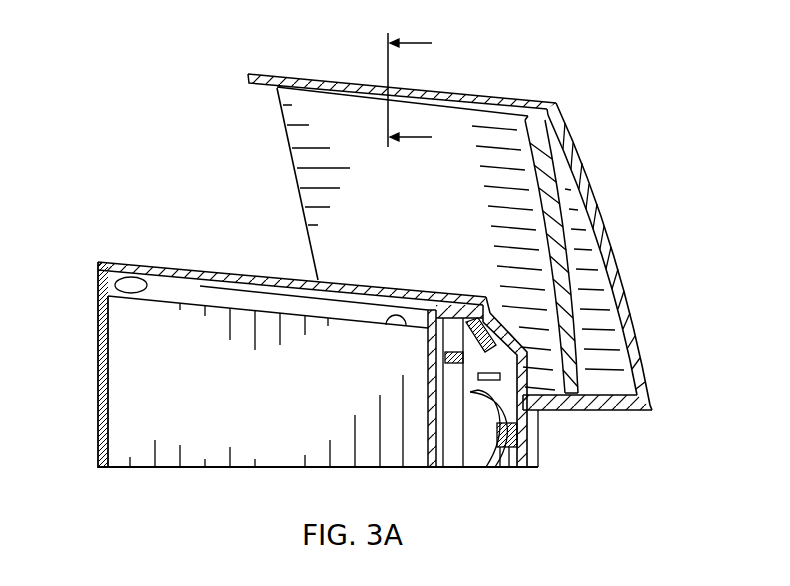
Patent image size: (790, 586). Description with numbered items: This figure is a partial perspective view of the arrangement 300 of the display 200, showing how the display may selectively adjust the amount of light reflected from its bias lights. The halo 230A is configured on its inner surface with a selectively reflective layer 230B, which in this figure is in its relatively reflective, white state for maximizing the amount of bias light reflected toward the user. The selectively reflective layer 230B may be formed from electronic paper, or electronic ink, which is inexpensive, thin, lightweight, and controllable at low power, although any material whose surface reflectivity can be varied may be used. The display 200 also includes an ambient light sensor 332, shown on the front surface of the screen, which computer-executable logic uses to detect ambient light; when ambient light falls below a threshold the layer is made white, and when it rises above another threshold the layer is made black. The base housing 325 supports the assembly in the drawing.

The laptop assembly 300 is at (597, 56).
The display 200 is at (270, 73).
The halo 230A is at (613, 239).
The selectively reflective layer 230B is at (299, 168).
The base housing 325 is at (285, 396).
The ambient light sensor 332 is at (118, 282).